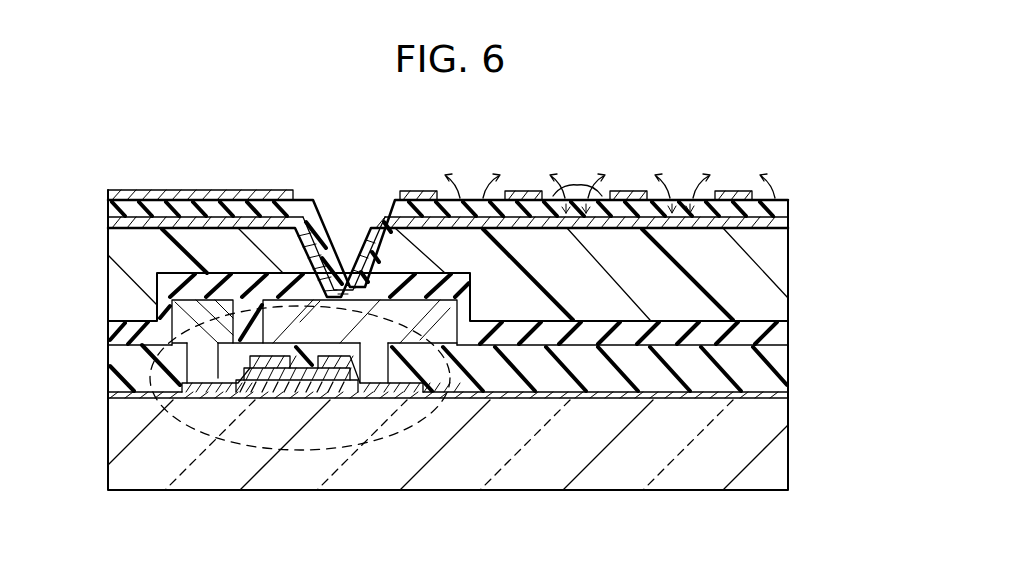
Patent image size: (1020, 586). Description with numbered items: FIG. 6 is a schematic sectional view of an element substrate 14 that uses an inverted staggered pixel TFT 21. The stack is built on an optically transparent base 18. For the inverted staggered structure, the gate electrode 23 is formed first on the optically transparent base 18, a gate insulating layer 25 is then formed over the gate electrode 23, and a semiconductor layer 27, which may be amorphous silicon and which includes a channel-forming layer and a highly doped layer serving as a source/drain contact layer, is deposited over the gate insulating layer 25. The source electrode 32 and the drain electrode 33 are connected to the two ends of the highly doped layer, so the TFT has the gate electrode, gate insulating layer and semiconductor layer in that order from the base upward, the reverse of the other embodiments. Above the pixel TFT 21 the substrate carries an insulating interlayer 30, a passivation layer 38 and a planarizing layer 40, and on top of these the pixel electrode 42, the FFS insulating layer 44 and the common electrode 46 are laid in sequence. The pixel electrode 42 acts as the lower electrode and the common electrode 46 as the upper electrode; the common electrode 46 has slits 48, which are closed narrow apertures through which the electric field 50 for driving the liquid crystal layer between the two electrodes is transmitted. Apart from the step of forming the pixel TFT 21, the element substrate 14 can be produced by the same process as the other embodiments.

The element substrate 14 is at (130, 169).
The optically transparent base 18 is at (770, 455).
The inverted staggered pixel TFT 21 is at (349, 450).
The gate electrode 23 is at (286, 381).
The drain electrode 25 is at (421, 390).
The source electrode 27 is at (194, 393).
The insulating interlayer 30 is at (783, 372).
The source electrode 32 is at (479, 398).
The drain electrode 33 is at (183, 318).
The passivation layer 38 is at (782, 330).
The planarizing layer 40 is at (790, 270).
The pixel electrode 42 is at (790, 222).
The FFS insulating layer 44 is at (782, 198).
The common electrode 46 is at (742, 192).
The slits 48 is at (686, 181).
The electric field 50 is at (577, 186).